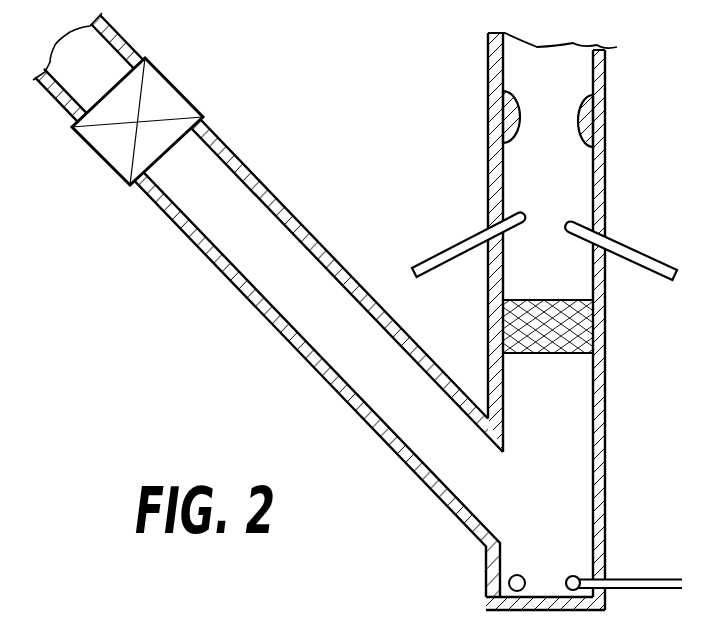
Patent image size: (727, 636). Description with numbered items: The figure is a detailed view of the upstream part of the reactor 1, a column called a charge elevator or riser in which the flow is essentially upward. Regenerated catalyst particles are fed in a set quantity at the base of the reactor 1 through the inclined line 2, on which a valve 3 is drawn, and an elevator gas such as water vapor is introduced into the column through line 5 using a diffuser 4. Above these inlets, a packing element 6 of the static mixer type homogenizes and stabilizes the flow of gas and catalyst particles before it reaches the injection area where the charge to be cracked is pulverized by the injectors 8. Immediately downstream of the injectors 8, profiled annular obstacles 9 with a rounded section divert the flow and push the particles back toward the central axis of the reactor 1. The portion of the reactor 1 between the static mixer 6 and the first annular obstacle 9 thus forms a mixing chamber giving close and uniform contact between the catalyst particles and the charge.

The column 1 is at (606, 185).
The line 2 is at (317, 243).
The valve 3 is at (173, 98).
The diffuser 4 is at (577, 574).
The line 5 is at (638, 582).
The packing element 6 is at (574, 328).
The injectors 8 is at (441, 255).
The profiled annular obstacles 9 is at (592, 120).